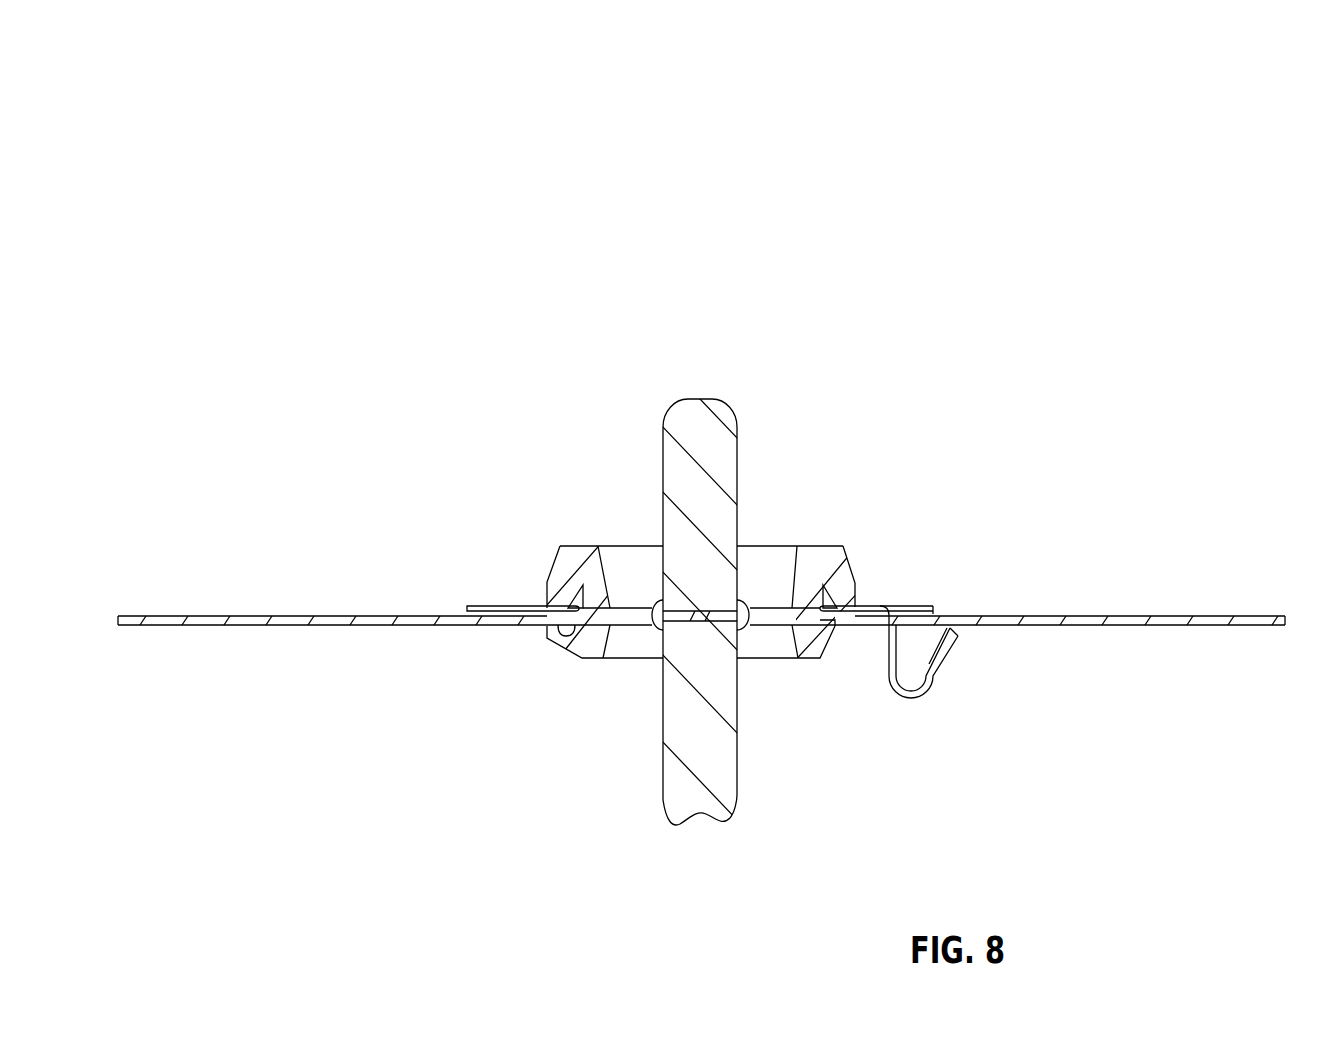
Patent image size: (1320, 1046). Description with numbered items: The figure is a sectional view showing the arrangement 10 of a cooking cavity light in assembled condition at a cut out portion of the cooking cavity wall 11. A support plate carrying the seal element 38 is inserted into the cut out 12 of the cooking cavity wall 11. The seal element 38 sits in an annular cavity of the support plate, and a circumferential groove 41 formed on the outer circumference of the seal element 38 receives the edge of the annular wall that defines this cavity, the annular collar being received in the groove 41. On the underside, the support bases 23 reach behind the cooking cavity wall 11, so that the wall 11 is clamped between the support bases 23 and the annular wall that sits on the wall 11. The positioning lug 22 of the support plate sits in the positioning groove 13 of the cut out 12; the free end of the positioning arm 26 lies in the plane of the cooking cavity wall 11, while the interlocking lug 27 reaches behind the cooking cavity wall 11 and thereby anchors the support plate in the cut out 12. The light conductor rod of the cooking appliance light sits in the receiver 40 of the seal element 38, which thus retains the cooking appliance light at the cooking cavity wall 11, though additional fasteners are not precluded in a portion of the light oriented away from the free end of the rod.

The arrangement 10 is at (1083, 187).
The cooking cavity wall 11 is at (1198, 628).
The cut out 12 is at (859, 632).
The positioning groove 13 is at (938, 607).
The positioning lug 22 is at (912, 710).
The support bases 23 is at (556, 652).
The positioning arm 26 is at (941, 680).
The interlocking lug 27 is at (957, 658).
The seal element 38 is at (863, 548).
The receiver 40 is at (742, 640).
The circumferential groove 41 is at (838, 597).